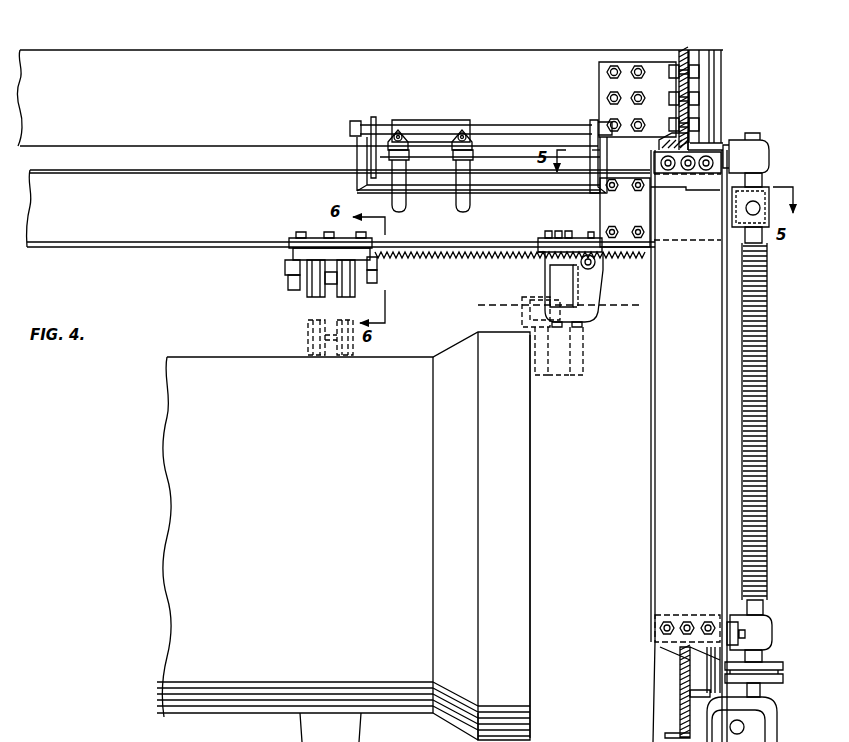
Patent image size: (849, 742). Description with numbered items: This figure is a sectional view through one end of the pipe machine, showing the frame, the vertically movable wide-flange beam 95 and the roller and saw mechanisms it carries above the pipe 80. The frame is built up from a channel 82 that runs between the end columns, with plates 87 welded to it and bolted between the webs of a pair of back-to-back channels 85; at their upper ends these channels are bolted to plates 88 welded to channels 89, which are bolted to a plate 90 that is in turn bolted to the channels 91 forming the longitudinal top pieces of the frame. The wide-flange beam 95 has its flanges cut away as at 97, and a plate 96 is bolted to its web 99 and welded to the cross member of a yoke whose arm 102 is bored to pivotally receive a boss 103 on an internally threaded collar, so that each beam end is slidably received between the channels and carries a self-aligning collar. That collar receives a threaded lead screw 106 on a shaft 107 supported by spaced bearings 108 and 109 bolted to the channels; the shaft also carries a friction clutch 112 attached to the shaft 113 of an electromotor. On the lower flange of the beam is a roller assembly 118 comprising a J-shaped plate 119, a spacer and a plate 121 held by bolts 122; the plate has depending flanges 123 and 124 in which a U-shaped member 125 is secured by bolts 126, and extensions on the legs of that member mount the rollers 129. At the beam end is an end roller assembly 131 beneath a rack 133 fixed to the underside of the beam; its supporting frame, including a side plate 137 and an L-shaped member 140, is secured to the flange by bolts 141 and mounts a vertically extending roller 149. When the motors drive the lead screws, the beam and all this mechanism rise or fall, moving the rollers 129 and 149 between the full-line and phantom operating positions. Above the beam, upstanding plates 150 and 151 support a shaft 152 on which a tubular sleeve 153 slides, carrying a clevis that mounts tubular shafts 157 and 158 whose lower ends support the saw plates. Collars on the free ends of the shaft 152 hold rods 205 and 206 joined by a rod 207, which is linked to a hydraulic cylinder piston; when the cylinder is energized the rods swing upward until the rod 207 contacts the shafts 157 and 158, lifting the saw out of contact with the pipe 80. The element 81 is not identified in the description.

The pipe 80 is at (343, 537).
The side flange of body 81 is at (522, 592).
The channel 82 is at (685, 705).
The channel 85 is at (672, 518).
The plates 87 is at (662, 614).
The plates 88 is at (708, 140).
The channels 89 is at (700, 91).
The plate 90 is at (627, 62).
The channels 91 is at (547, 50).
The wide-flange beam 95 is at (143, 222).
The plate 96 is at (610, 212).
The cut-away 97 is at (690, 245).
The web 99 is at (180, 190).
The yoke arm 102 is at (736, 203).
The boss 103 is at (748, 212).
The threaded lead screw 106 is at (745, 440).
The shaft 107 is at (747, 608).
The bearing 108 is at (760, 142).
The bearing 109 is at (755, 627).
The friction clutch 112 is at (767, 665).
The motor shaft 113 is at (758, 692).
The roller assembly 118 is at (288, 240).
The J-shaped plate 119 is at (292, 253).
The plate 121 is at (316, 238).
The bolts 122 is at (301, 232).
The depending flange 123 is at (377, 262).
The depending flange 124 is at (287, 268).
The U-shaped member 125 is at (292, 283).
The bolts 126 is at (377, 276).
The rollers 129 is at (317, 297).
The end roller assembly 131 is at (588, 294).
The rack 133 is at (486, 252).
The side plate 137 is at (596, 276).
The L-shaped member 140 is at (542, 236).
The bolts 141 is at (552, 231).
The vertically extending roller 149 is at (556, 277).
The upstanding plate 150 is at (374, 117).
The upstanding plate 151 is at (592, 140).
The shaft 152 is at (512, 125).
The tubular sleeve 153 is at (440, 122).
The tubular shaft 157 is at (462, 205).
The tubular shaft 158 is at (393, 205).
The rod 205 is at (357, 160).
The rod 206 is at (594, 145).
The rod 207 is at (512, 188).